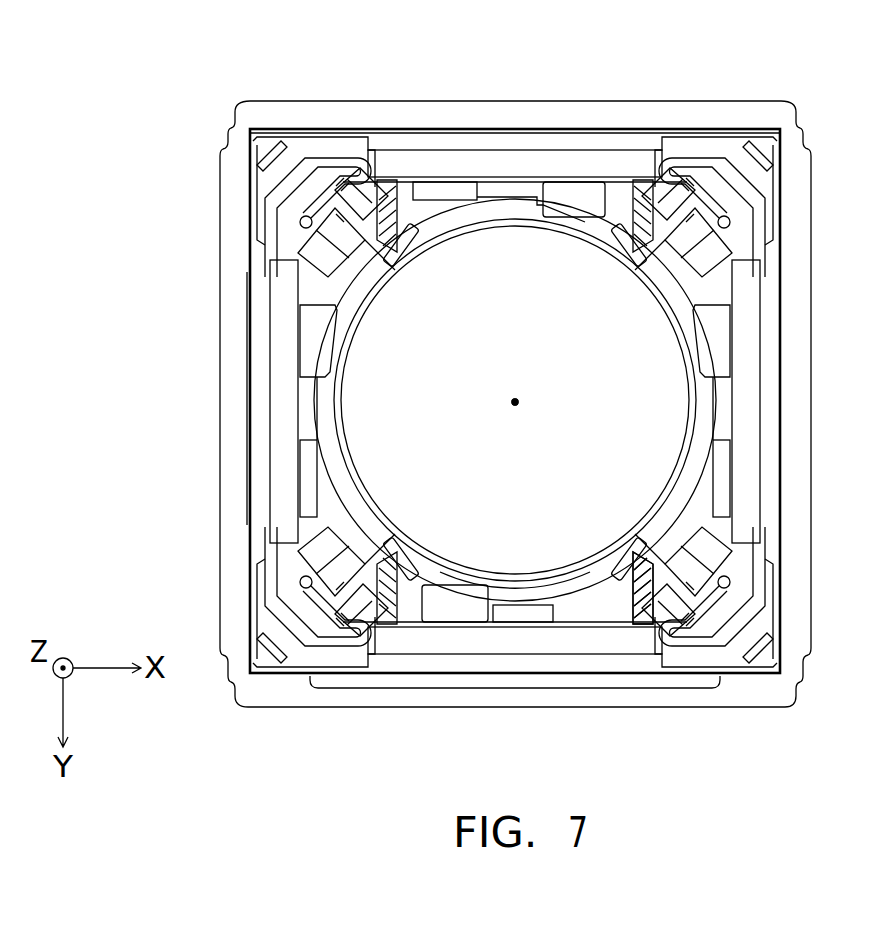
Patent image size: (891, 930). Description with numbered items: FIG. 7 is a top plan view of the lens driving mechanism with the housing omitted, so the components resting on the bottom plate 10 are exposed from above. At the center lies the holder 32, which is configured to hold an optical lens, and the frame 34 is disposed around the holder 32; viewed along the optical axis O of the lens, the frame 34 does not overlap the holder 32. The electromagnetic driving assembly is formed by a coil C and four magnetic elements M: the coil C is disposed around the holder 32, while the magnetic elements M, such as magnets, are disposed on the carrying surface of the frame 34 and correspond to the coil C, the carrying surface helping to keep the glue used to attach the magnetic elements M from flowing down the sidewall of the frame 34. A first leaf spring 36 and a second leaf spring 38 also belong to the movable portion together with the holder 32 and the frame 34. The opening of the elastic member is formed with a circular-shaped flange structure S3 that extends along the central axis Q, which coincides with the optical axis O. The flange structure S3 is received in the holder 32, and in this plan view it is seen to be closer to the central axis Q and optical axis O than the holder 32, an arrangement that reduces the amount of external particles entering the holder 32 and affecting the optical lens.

The bottom plate 10 is at (232, 522).
The holder 32 is at (584, 200).
The frame 34 is at (768, 132).
The first leaf spring 36 is at (376, 190).
The second leaf spring 38 is at (652, 142).
The magnetic elements M is at (513, 163).
The coil C is at (712, 510).
The flange structure S3 is at (515, 581).
The optical axis O is at (519, 402).
The central axis Q is at (515, 402).